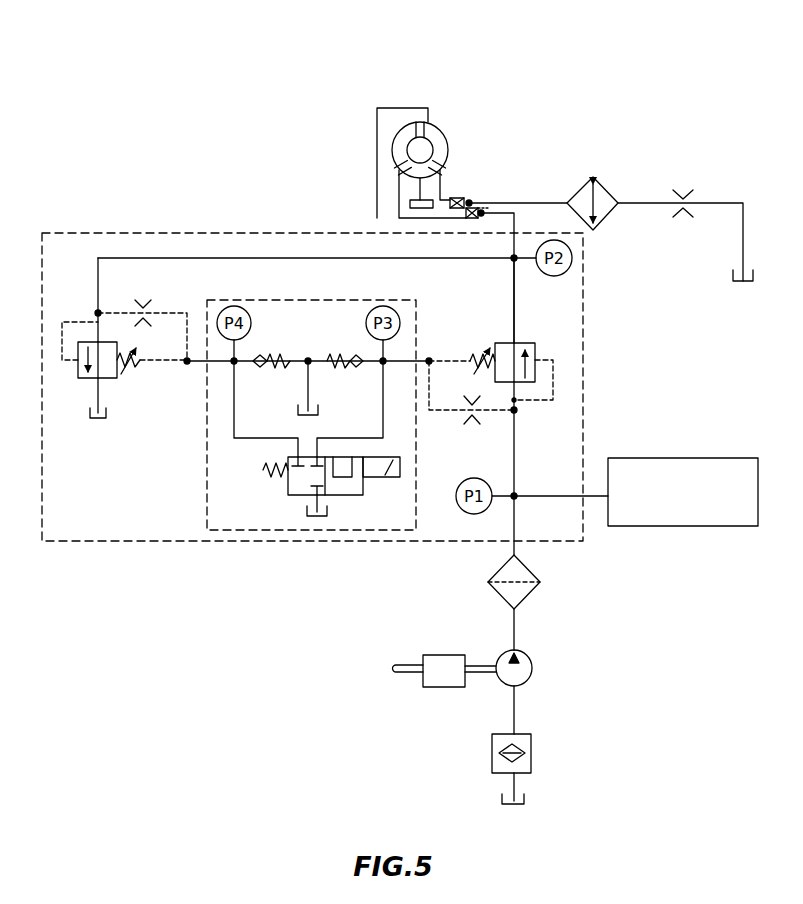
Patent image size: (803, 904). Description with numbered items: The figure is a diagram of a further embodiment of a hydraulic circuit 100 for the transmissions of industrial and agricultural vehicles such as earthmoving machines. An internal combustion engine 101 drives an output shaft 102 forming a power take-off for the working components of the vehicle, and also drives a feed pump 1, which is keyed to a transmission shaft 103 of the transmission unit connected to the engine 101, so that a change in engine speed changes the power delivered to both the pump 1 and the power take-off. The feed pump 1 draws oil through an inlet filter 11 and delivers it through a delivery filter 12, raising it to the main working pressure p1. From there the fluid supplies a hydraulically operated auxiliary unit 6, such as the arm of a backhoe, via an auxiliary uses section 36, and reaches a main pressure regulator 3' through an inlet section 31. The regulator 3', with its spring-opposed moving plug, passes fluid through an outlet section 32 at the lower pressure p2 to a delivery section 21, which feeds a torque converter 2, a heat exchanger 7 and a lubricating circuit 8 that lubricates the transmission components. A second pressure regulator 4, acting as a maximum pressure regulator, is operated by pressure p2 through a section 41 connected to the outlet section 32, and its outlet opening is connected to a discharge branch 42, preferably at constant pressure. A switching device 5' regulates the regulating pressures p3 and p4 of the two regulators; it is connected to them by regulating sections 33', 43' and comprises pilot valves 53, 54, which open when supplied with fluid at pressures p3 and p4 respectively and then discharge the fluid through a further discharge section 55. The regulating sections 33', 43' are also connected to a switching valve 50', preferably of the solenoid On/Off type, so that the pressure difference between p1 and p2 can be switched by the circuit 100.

The hydraulic circuit 100 is at (151, 79).
The torque converter 2 is at (405, 108).
The delivery section 21 is at (522, 203).
The heat exchanger 7 is at (606, 190).
The lubricating circuit 8 is at (683, 188).
The section of hydraulic circuit 41 is at (165, 233).
The second pressure regulator 4 is at (78, 367).
The discharge branch 42 is at (97, 393).
The regulating section 43' is at (280, 476).
The switching device 5' is at (293, 447).
The pilot valve 54 is at (279, 352).
The pilot valve 53 is at (342, 352).
The further discharge section 55 is at (302, 387).
The switching valve 50' is at (317, 478).
The regulating section 33' is at (460, 479).
The main pressure regulator 3' is at (555, 365).
The outlet section 32 is at (515, 305).
The inlet section 31 is at (515, 435).
The auxiliary uses section 36 is at (590, 496).
The hydraulically operated auxiliary unit 6 is at (672, 526).
The delivery filter 12 is at (525, 597).
The feed pump 1 is at (532, 672).
The transmission shaft 103 is at (477, 674).
The internal combustion engine 101 is at (440, 687).
The output shaft 102 is at (403, 675).
The inlet filter 11 is at (531, 760).